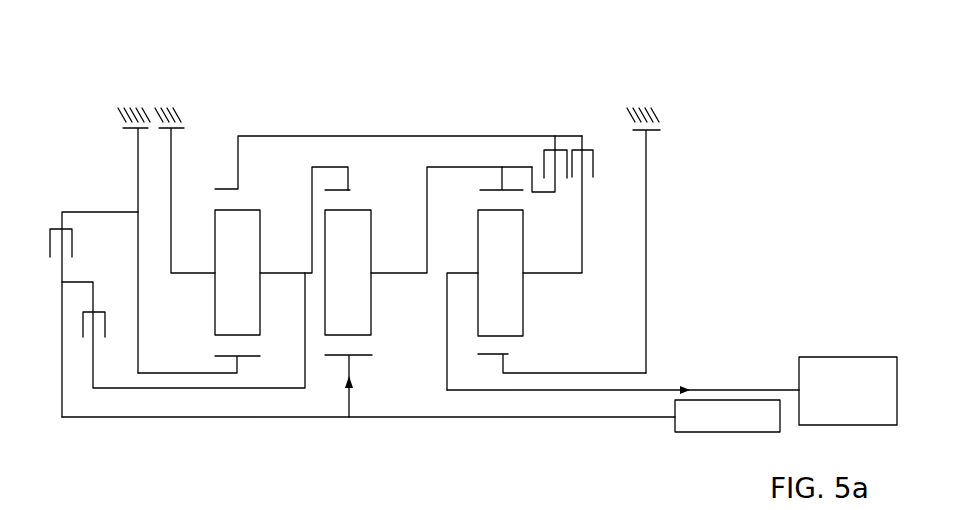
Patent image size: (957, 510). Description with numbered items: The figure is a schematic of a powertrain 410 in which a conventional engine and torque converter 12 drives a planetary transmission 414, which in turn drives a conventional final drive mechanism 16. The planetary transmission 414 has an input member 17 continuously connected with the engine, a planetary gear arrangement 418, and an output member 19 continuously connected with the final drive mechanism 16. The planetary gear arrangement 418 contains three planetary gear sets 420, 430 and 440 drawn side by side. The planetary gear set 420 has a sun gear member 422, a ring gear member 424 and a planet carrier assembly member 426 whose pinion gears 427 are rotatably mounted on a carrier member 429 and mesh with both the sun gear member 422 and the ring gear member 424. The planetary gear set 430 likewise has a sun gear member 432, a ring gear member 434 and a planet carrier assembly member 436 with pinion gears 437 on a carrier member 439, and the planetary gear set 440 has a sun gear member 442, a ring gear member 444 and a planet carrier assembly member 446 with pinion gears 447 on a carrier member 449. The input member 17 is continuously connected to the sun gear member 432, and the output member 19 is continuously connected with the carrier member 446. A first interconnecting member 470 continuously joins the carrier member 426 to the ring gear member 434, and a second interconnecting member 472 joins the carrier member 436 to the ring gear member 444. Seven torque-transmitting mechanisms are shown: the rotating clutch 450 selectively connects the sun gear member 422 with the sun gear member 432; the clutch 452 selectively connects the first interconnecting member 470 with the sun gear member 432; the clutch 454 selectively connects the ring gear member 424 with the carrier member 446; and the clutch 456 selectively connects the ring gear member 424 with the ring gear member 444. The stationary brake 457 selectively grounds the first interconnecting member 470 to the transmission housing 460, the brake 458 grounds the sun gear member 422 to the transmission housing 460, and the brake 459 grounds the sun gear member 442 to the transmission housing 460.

The engine and torque converter 12 is at (740, 433).
The final drive mechanism 16 is at (855, 357).
The input member 17 is at (585, 417).
The output member 19 is at (660, 391).
The powertrain 410 is at (503, 68).
The planetary transmission 414 is at (558, 72).
The planetary gear arrangement 418 is at (252, 78).
The planetary gear set 420 is at (228, 359).
The sun gear member 422 is at (248, 356).
The ring gear member 424 is at (242, 191).
The planet carrier assembly member 426 is at (210, 265).
The pinion gears 427 is at (237, 272).
The carrier member 429 is at (185, 275).
The planetary gear set 430 is at (341, 361).
The sun gear member 432 is at (358, 357).
The ring gear member 434 is at (352, 190).
The planet carrier assembly member 436 is at (378, 262).
The pinion gears 437 is at (349, 272).
The carrier member 439 is at (410, 273).
The planetary gear set 440 is at (497, 362).
The sun gear member 442 is at (508, 354).
The ring gear member 444 is at (480, 191).
The planet carrier assembly member 446 is at (470, 262).
The pinion gears 447 is at (501, 273).
The carrier member 449 is at (537, 275).
The clutch 450 is at (107, 257).
The clutch 452 is at (87, 345).
The clutch 454 is at (590, 184).
The clutch 456 is at (562, 185).
The brake 457 is at (192, 131).
The brake 458 is at (116, 131).
The brake 459 is at (666, 133).
The transmission housing 460 is at (182, 108).
The first interconnecting member 470 is at (340, 167).
The second interconnecting member 472 is at (488, 167).